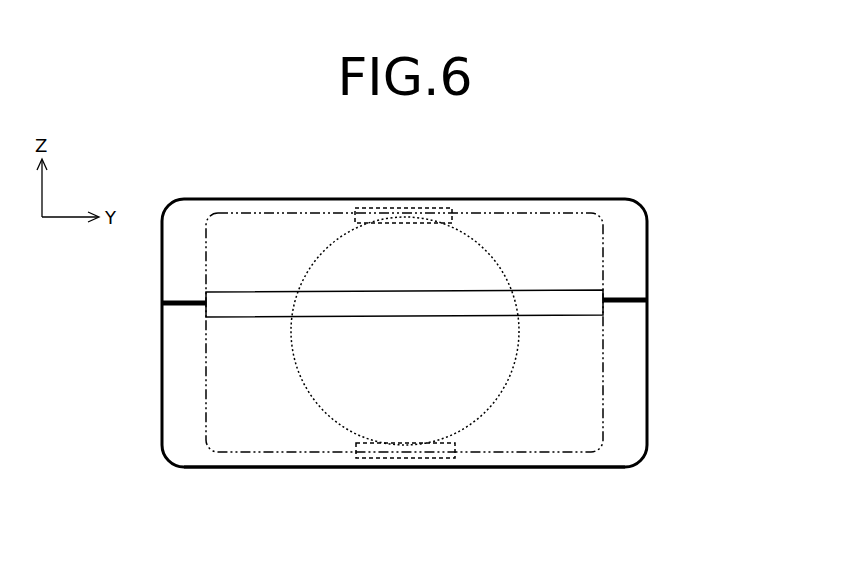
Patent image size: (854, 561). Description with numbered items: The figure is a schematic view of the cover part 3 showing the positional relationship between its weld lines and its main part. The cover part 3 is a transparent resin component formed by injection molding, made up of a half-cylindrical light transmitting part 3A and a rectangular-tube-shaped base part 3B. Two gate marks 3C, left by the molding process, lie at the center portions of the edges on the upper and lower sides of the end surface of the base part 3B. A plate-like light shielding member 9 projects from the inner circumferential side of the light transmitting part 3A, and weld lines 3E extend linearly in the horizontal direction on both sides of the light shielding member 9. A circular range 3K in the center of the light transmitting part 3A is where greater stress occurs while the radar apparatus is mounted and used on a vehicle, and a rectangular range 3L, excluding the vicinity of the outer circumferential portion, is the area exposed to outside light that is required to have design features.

The cover part 3 is at (632, 190).
The light transmitting part 3A is at (283, 405).
The base part 3B is at (600, 467).
The gate marks 3C is at (357, 216).
The weld lines 3E is at (181, 300).
The circular range in the center of the light transmitting part 3K is at (484, 246).
The rectangular range excluding the vicinity of the outer circumferential portion 3L is at (539, 211).
The light shielding member 9 is at (257, 311).